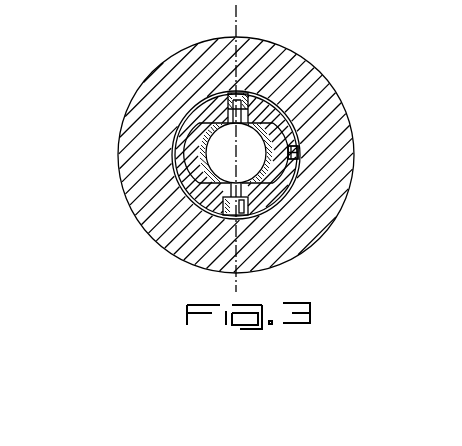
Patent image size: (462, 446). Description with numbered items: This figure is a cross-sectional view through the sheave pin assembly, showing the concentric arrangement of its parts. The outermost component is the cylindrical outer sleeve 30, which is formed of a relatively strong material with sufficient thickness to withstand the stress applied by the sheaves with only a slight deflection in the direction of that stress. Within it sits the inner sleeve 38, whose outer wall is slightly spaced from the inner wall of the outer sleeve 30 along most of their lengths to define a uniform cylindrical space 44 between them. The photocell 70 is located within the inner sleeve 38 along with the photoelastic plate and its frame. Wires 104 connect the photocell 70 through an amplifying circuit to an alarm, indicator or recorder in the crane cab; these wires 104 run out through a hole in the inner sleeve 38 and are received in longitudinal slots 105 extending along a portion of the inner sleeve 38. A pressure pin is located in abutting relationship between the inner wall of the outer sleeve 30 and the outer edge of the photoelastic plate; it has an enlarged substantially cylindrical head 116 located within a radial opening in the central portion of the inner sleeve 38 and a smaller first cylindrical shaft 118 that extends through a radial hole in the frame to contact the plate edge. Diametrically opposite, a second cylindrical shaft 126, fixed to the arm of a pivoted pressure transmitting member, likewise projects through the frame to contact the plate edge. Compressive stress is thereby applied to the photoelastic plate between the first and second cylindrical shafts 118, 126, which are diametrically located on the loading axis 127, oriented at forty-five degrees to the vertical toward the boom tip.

The outer sleeve 30 is at (138, 106).
The uniform cylindrical space 44 is at (168, 141).
The inner sleeve 38 is at (185, 166).
The first photocell 70 is at (251, 173).
The second cylindrical shaft 126 is at (250, 113).
The wires 104 is at (298, 150).
The longitudinal slots 105 is at (298, 156).
The first cylindrical shaft 118 is at (228, 197).
The head 116 is at (228, 217).
The loading axis 127 is at (241, 13).